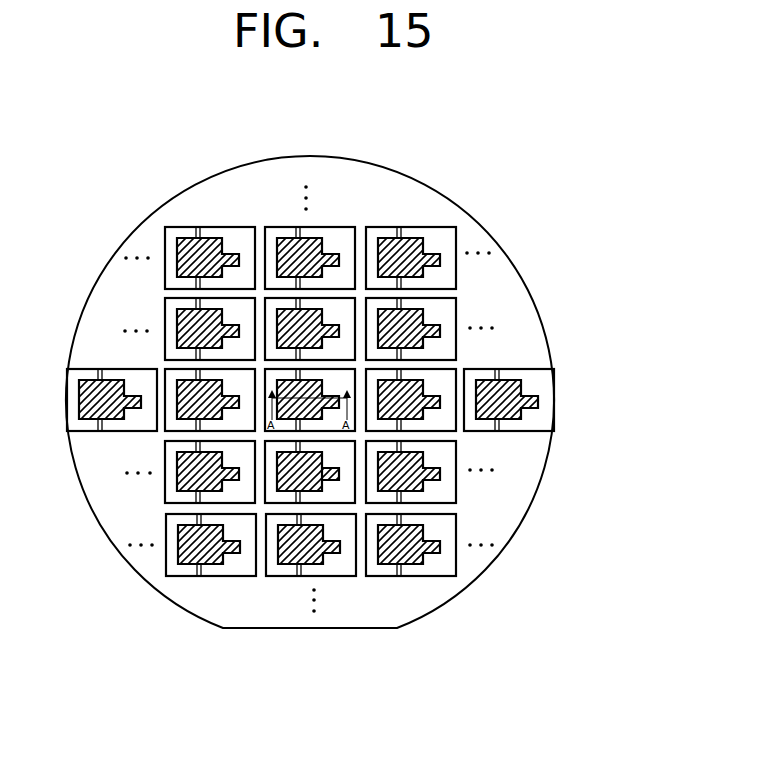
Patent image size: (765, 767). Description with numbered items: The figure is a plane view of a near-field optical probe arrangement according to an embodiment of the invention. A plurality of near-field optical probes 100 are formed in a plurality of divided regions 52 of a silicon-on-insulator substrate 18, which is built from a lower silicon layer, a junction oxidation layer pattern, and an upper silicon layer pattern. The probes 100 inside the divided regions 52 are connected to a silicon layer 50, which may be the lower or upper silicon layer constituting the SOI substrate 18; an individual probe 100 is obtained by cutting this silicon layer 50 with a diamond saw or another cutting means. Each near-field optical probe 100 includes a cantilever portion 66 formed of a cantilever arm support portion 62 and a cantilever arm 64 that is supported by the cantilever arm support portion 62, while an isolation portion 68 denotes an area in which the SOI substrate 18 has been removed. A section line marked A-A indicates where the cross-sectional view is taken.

The silicon-on-insulator (SOI) substrate 18 is at (472, 233).
The silicon layer 50 is at (297, 228).
The near-field optical probe 100 is at (328, 228).
The region 52 is at (423, 227).
The cantilever arm support portion 62 is at (288, 490).
The cantilever arm 64 is at (333, 477).
The cantilever portion 66 is at (326, 582).
The isolation portion 68 is at (345, 490).